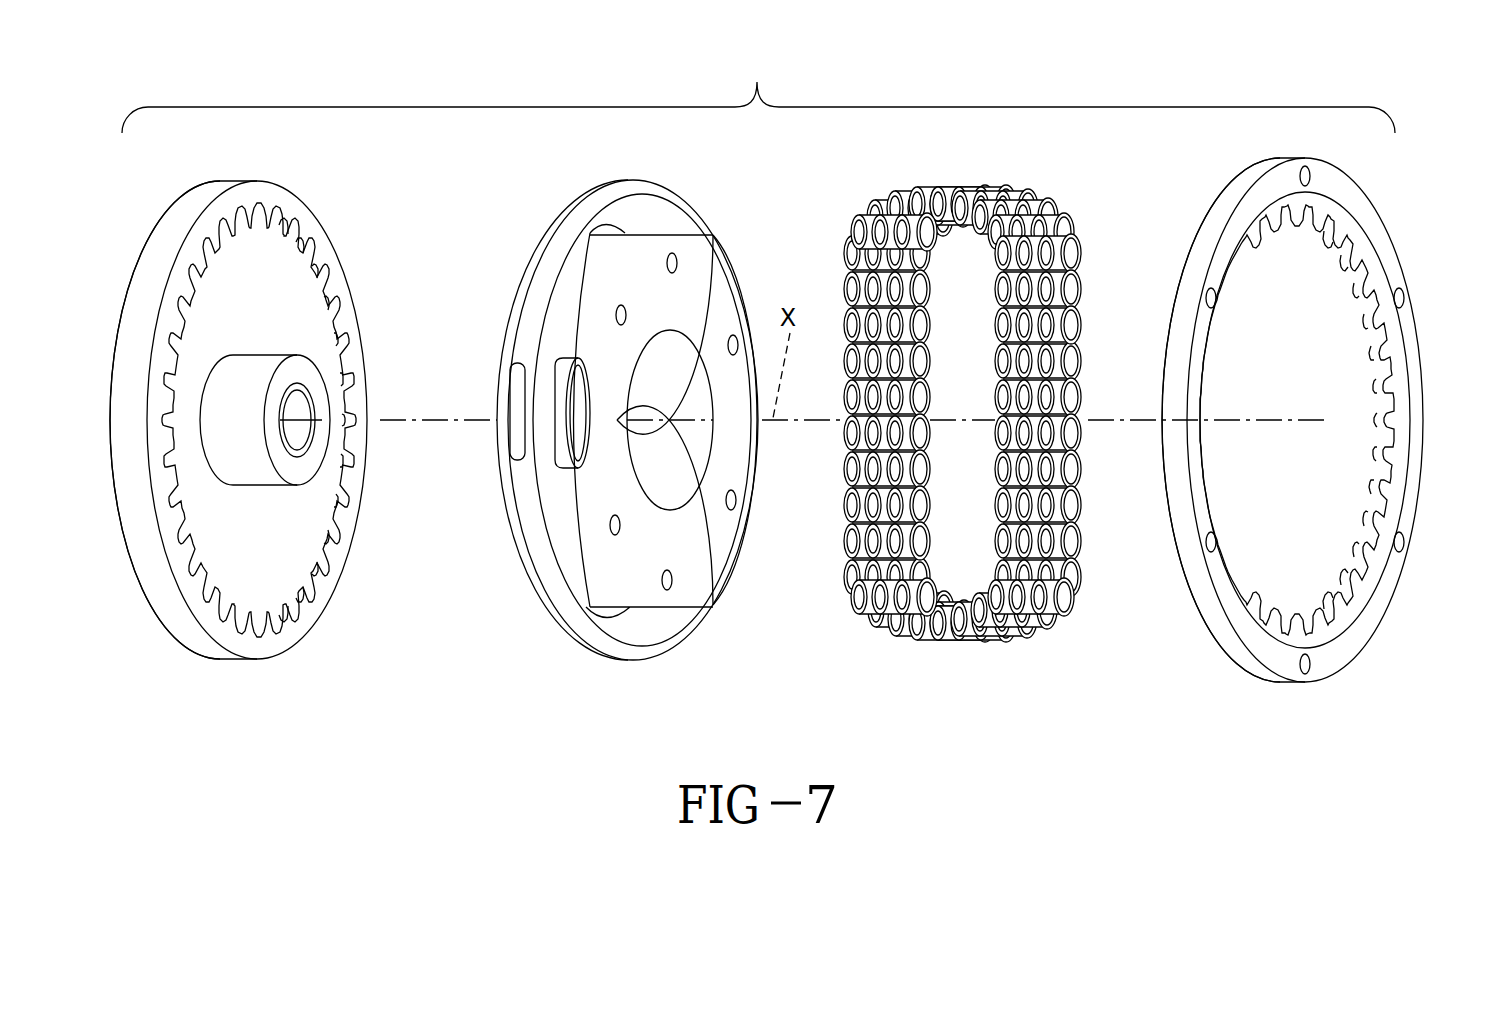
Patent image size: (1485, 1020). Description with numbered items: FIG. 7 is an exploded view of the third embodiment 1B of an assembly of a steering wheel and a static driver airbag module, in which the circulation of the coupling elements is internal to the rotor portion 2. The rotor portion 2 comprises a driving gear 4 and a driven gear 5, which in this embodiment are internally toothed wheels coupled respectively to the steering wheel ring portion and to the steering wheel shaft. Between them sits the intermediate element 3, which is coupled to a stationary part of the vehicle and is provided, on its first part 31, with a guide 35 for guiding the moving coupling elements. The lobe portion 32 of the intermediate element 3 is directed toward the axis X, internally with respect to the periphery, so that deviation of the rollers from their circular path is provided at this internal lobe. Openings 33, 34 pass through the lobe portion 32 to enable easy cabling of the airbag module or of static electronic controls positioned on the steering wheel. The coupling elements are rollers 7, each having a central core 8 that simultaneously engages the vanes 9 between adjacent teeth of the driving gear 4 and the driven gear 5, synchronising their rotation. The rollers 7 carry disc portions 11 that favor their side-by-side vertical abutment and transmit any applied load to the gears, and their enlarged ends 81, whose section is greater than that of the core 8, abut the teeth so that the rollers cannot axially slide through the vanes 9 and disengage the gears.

The third embodiment of an assembly 1B is at (758, 90).
The rotor portion 2 is at (349, 702).
The intermediate element 3 is at (594, 416).
The first part 31 is at (620, 218).
The lobe portion 32 is at (565, 358).
The opening 33 is at (577, 430).
The opening 34 is at (515, 382).
The guide 35 is at (680, 212).
The driving gear 4 is at (1313, 684).
The driven gear 5 is at (276, 661).
The roller 7 is at (967, 428).
The central core 8 is at (1037, 290).
The enlarged end 81 is at (1070, 323).
The vane 9 is at (330, 268).
The disc portion 11 is at (894, 237).